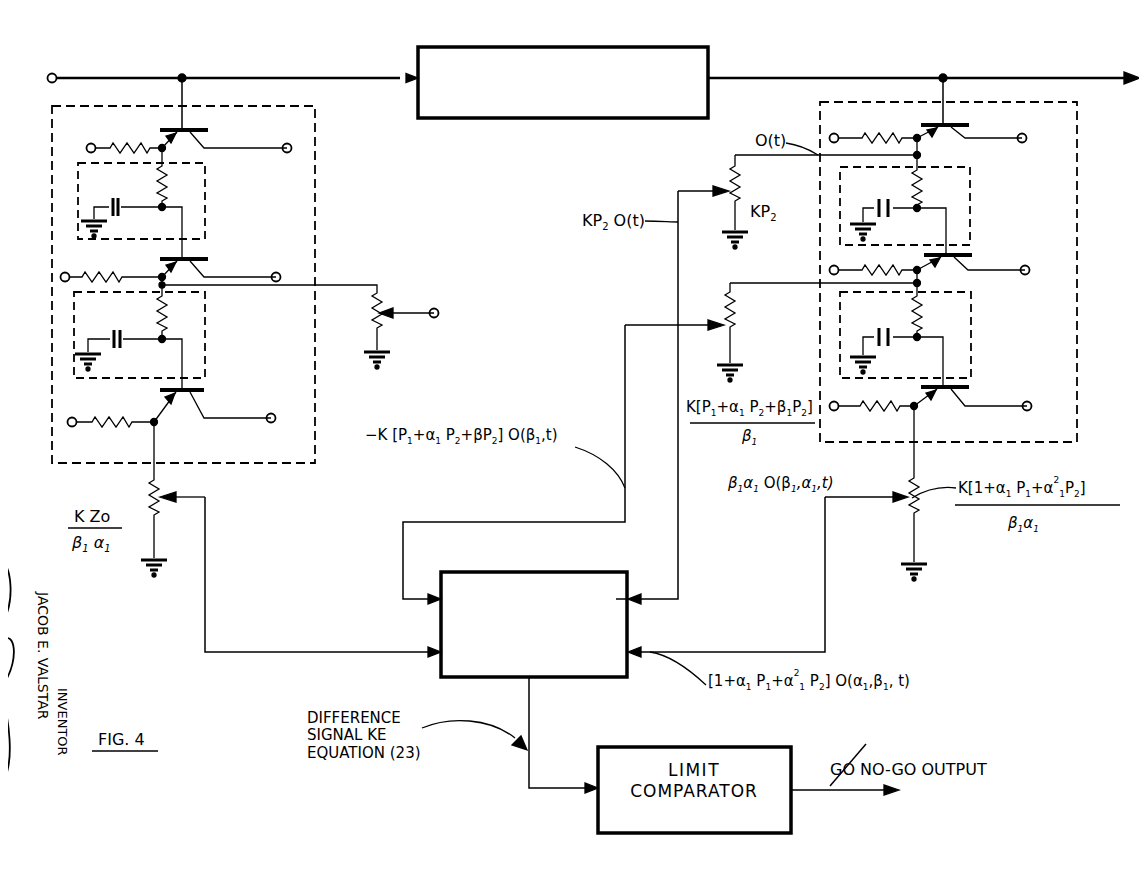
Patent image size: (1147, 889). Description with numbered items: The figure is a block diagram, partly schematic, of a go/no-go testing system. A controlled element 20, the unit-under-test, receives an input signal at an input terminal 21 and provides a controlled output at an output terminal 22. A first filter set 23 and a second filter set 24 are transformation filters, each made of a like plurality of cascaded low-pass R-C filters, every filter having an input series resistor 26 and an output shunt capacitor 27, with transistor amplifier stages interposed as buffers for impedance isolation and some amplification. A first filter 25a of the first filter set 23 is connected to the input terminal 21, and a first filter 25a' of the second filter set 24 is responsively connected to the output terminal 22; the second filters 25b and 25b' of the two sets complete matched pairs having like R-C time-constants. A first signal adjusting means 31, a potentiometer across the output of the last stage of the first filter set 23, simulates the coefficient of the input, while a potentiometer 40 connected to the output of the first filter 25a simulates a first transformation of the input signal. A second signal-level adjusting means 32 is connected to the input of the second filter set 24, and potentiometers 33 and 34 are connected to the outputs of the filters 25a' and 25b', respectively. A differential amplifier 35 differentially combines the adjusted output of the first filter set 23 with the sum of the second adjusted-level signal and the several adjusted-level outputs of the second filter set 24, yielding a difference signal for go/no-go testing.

The controlled element 20 is at (663, 73).
The input terminal 21 is at (50, 73).
The output terminal 22 is at (1075, 76).
The first filter set 23 is at (316, 190).
The second filter set 24 is at (1077, 207).
The first filter 25a is at (160, 201).
The second filter 25b is at (158, 327).
The first filter 25a' is at (934, 191).
The second filter 25b' is at (929, 324).
The input series resistor 26 is at (147, 177).
The output shunt capacitor 27 is at (114, 200).
The first signal adjusting means 31 is at (168, 504).
The second signal-level adjusting means 32 is at (712, 178).
The potentiometer 33 is at (714, 314).
The potentiometer 34 is at (905, 462).
The differential amplifier 35 is at (537, 583).
The potentiometer 40 is at (436, 308).